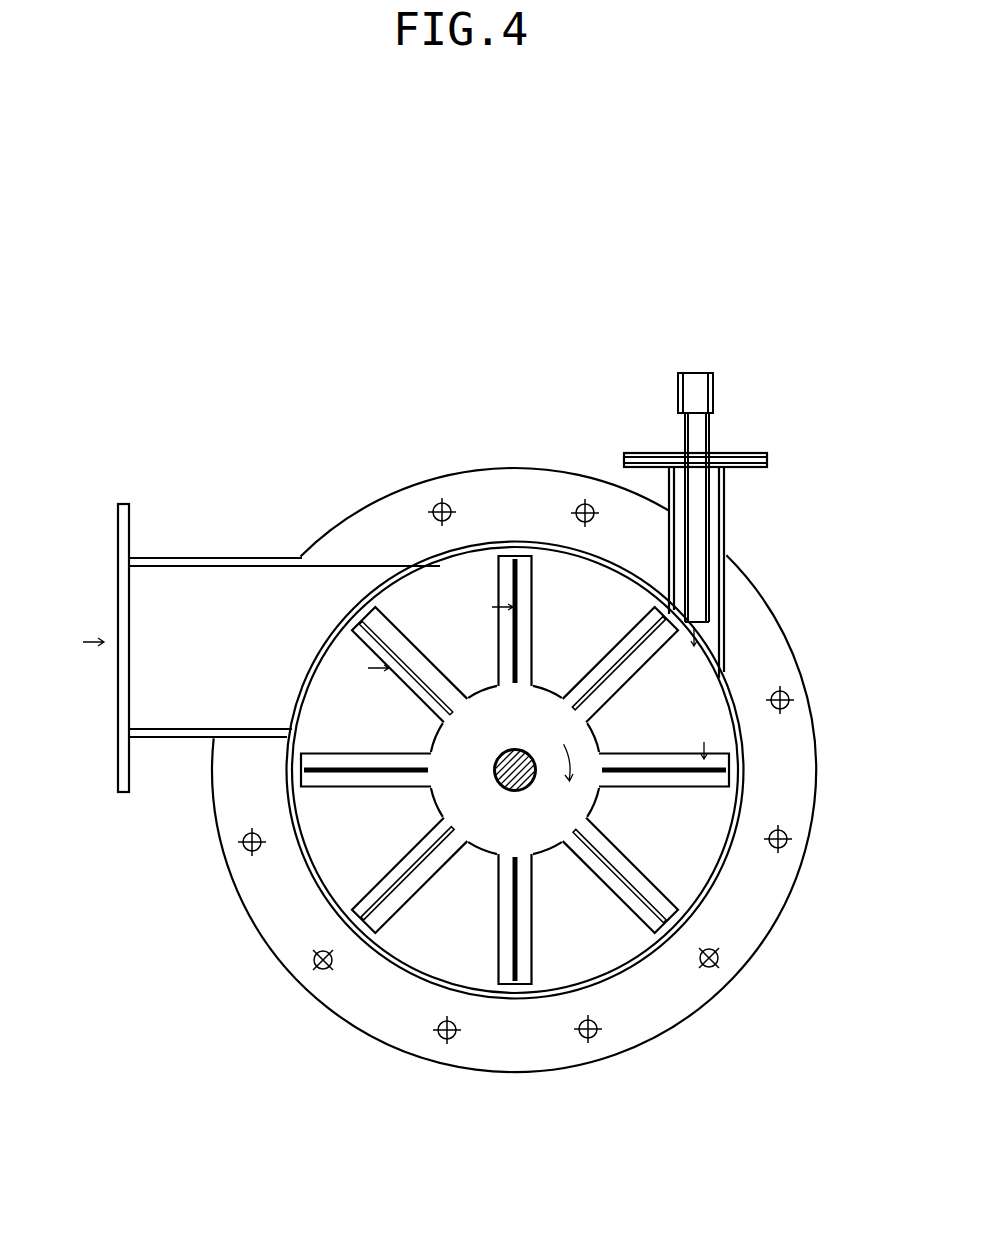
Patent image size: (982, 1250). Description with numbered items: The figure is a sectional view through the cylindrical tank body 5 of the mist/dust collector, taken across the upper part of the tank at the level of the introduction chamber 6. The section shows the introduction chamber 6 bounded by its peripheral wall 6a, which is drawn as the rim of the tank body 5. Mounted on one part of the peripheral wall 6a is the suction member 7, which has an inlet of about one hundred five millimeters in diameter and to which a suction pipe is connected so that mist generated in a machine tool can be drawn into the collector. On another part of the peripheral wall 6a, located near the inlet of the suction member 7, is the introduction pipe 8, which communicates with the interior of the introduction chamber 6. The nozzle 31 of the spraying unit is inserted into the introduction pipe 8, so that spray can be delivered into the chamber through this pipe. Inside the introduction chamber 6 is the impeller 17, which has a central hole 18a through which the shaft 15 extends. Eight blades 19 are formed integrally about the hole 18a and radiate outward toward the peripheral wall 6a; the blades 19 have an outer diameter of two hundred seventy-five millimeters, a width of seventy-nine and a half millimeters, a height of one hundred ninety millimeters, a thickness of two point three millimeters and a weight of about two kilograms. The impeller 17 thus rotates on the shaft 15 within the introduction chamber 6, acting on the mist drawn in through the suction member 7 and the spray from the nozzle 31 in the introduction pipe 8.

The tank body 5 is at (445, 556).
The introduction chamber 6 is at (527, 692).
The peripheral wall 6a is at (300, 855).
The suction member 7 is at (132, 610).
The introduction pipe 8 is at (719, 520).
The nozzle 31 is at (708, 593).
The shaft 15 is at (523, 757).
The impeller 17 is at (733, 763).
The hole 18a is at (532, 780).
The blades 19 is at (653, 902).